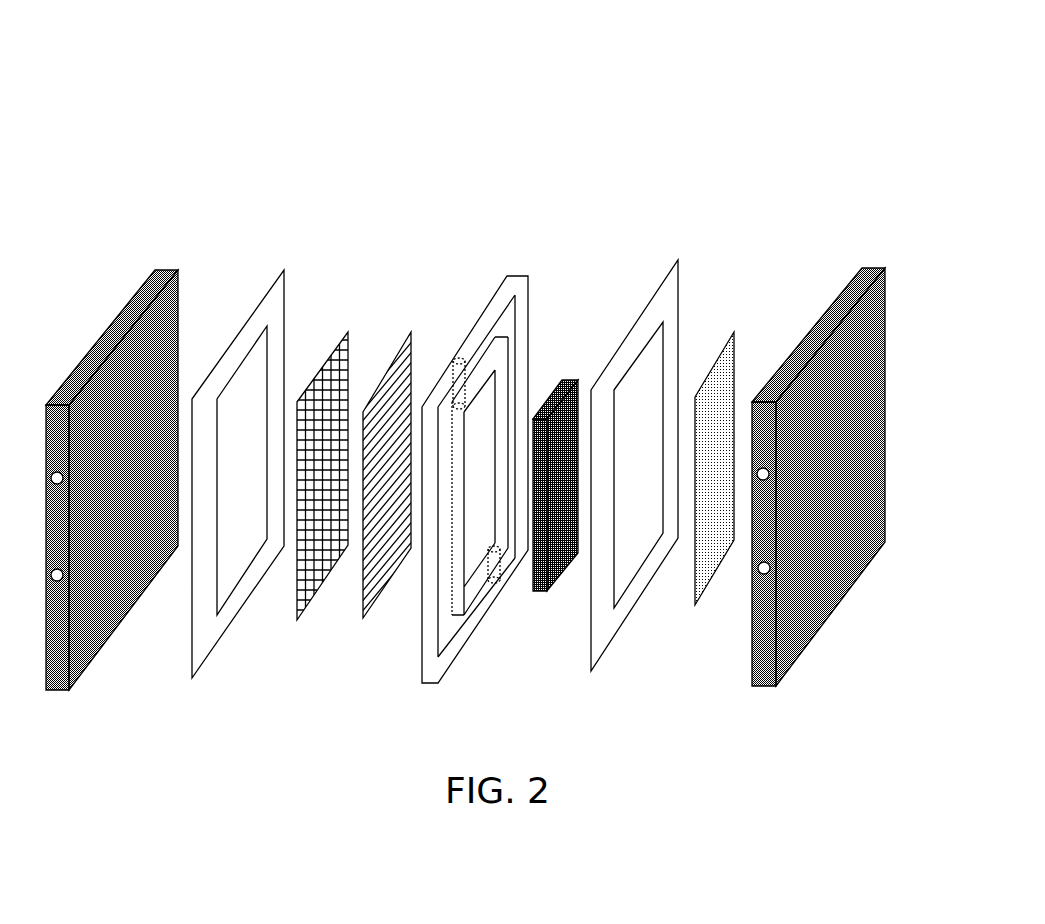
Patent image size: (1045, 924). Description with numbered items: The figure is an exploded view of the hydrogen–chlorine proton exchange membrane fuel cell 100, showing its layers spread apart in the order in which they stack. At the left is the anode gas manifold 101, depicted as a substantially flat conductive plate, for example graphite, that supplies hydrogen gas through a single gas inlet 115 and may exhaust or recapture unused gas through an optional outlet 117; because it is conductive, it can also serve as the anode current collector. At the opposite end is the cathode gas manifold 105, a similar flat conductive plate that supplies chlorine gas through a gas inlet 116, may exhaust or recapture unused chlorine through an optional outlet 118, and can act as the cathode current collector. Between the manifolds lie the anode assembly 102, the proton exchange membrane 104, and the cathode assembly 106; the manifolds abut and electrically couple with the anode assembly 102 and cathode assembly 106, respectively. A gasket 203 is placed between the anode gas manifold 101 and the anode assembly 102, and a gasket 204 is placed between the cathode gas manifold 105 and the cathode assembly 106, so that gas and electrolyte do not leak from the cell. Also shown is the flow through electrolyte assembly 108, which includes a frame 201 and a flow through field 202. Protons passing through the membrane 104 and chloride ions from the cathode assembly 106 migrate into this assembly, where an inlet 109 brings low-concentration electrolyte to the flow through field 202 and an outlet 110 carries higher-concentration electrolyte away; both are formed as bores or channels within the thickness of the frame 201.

The fuel cell 100 is at (654, 122).
The anode gas manifold 101 is at (113, 493).
The anode assembly 102 is at (347, 322).
The proton exchange membrane 104 is at (411, 322).
The cathode gas manifold 105 is at (762, 473).
The cathode assembly 106 is at (719, 330).
The flow through electrolyte assembly 108 is at (445, 167).
The inlet 109 is at (458, 347).
The outlet 110 is at (495, 607).
The gas inlet 115 is at (64, 495).
The gas inlet 116 is at (754, 494).
The outlet 117 is at (64, 597).
The outlet 118 is at (770, 592).
The frame 201 is at (513, 266).
The flow through field 202 is at (562, 370).
The gasket 203 is at (277, 262).
The gasket 204 is at (675, 252).